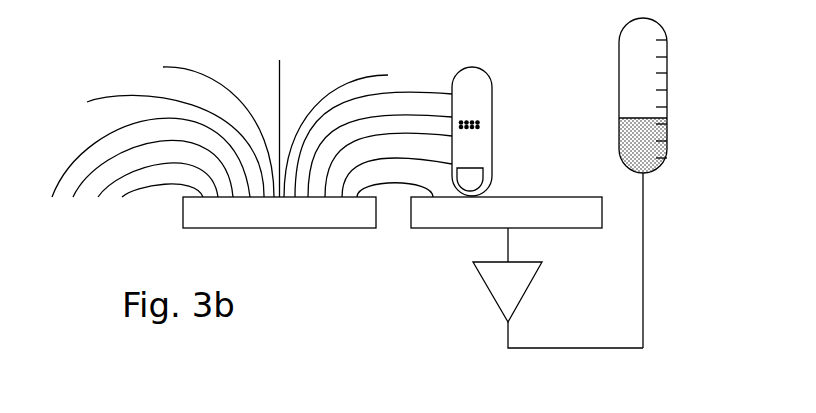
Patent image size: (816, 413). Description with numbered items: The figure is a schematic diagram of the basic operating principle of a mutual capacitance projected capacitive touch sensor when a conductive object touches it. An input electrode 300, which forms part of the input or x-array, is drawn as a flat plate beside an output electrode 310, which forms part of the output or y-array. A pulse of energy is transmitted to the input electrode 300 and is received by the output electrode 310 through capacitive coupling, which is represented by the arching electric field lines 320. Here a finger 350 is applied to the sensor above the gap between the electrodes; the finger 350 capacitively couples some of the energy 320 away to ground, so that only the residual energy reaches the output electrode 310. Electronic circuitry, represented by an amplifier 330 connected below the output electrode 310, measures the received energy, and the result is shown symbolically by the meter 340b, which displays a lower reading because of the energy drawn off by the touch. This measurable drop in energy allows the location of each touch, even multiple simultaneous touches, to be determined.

The input electrode 300 is at (280, 217).
The output electrode 310 is at (448, 215).
The electric field lines 320 is at (440, 90).
The amplifier 330 is at (488, 280).
The meter 340b is at (628, 90).
The finger 350 is at (467, 93).